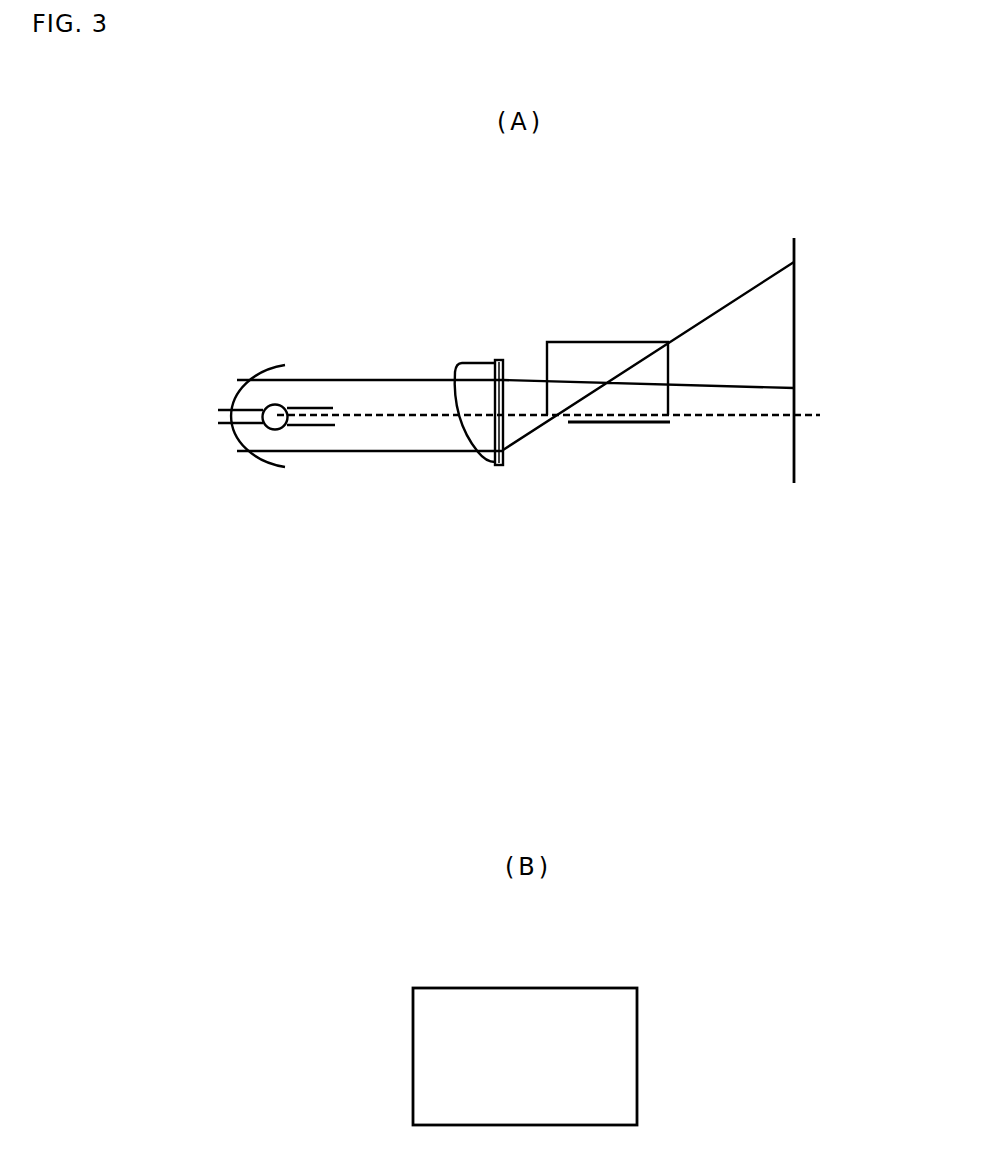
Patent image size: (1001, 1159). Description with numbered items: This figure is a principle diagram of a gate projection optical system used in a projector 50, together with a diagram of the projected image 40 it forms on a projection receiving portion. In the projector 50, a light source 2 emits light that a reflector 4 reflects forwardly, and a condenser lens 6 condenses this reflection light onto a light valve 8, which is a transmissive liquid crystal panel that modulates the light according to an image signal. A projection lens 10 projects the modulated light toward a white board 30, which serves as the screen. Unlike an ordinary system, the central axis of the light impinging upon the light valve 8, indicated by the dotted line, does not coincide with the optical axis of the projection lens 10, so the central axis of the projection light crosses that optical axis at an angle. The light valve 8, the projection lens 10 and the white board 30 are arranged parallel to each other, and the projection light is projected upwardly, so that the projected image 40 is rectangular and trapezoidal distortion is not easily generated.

The light source 2 is at (333, 408).
The reflector 4 is at (262, 363).
The condenser lens 6 is at (466, 366).
The light valve 8 is at (500, 362).
The projection lens 10 is at (627, 341).
The white board 30 is at (796, 332).
The projected image 40 is at (637, 1063).
The projector 50 is at (751, 231).